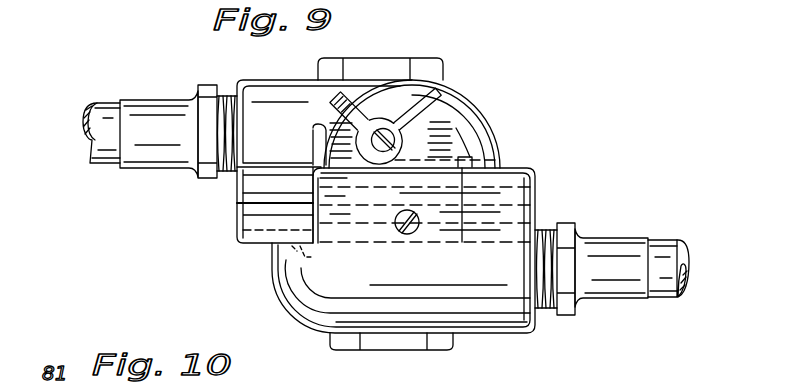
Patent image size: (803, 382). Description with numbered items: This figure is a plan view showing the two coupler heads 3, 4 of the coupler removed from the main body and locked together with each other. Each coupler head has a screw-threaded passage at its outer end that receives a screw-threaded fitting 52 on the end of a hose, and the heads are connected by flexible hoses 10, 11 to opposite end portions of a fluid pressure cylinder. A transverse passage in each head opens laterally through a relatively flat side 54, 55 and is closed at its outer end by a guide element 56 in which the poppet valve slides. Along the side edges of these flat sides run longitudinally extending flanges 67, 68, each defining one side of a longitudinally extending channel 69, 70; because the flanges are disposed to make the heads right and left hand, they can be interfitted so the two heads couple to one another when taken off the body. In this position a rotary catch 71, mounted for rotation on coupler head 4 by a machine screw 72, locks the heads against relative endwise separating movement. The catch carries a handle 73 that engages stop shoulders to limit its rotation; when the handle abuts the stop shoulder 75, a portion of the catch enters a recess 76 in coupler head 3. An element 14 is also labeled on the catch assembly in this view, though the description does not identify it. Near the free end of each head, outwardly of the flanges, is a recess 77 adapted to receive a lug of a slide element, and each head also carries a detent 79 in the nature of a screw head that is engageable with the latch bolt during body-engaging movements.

The coupler head 3 is at (497, 318).
The coupler head 4 is at (470, 117).
The flexible hose 10 is at (668, 263).
The flexible hose 11 is at (103, 140).
The arm 14 is at (428, 100).
The fitting 52 is at (160, 112).
The flat side 54 is at (503, 205).
The flat side 55 is at (258, 205).
The guide element 56 is at (338, 66).
The flange 67 is at (257, 197).
The flange 68 is at (257, 231).
The channel 69 is at (255, 176).
The channel 70 is at (272, 215).
The rotary catch 71 is at (381, 126).
The machine screw 72 is at (389, 125).
The handle 73 is at (338, 100).
The stop shoulder 75 is at (332, 122).
The recess 76 is at (383, 166).
The recess 77 is at (474, 158).
The detent 79 is at (409, 235).